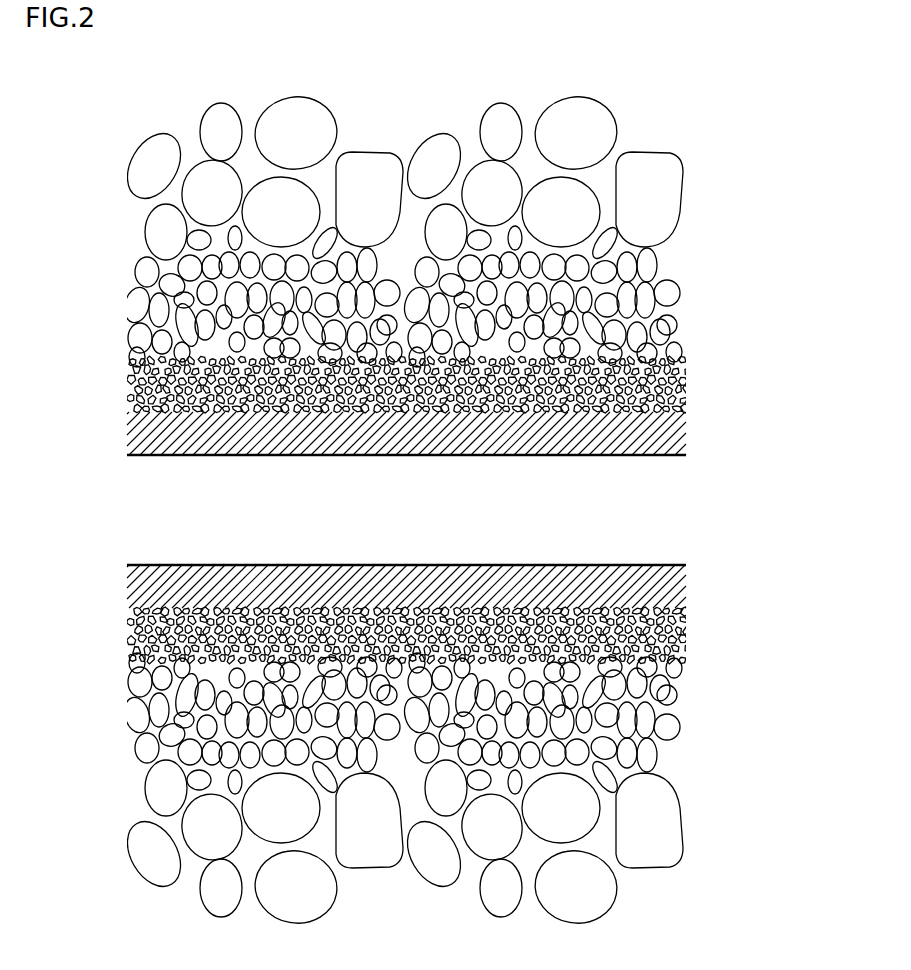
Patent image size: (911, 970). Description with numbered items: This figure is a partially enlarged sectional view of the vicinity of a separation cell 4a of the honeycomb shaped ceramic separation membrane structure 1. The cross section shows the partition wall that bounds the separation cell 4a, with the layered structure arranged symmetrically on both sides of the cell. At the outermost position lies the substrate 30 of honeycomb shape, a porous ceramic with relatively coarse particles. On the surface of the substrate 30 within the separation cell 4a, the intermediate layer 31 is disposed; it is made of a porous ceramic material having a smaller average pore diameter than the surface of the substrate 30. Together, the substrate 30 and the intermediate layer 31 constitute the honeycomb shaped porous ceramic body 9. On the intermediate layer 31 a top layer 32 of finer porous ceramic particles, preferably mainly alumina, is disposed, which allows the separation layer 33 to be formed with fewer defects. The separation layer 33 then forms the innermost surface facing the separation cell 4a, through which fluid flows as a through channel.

The honeycomb shaped ceramic separation membrane structure 1 is at (852, 499).
The honeycomb shaped porous ceramic body 9 is at (499, 509).
The substrate 30 is at (713, 92).
The intermediate layer 31 is at (713, 230).
The top layer 32 is at (445, 510).
The separation layer 33 is at (683, 445).
The separation cell 4a is at (152, 504).